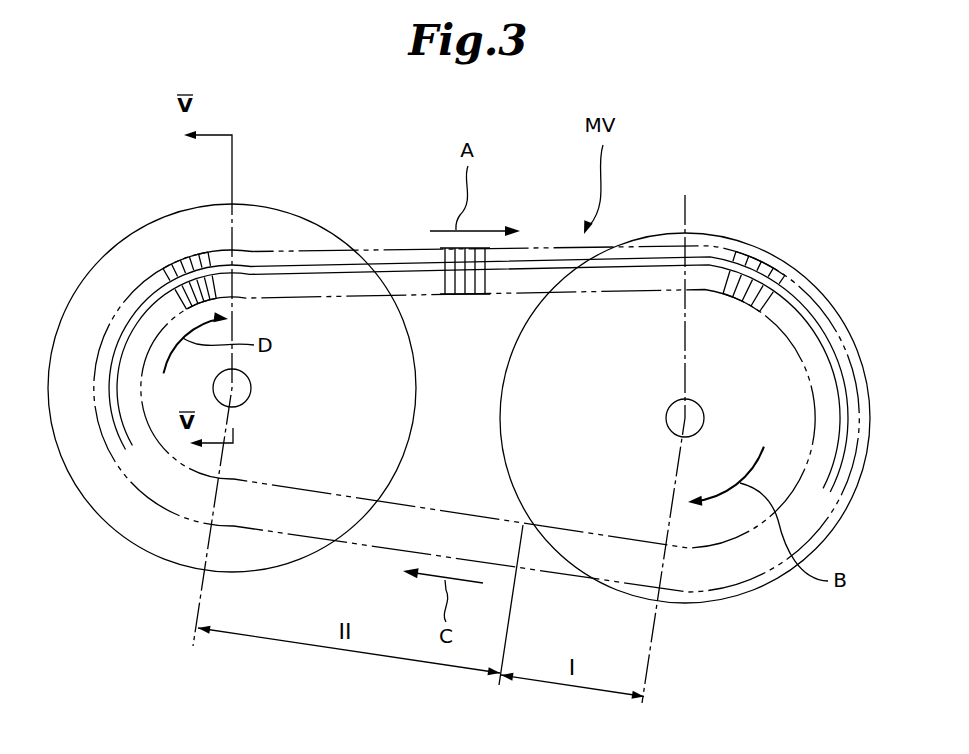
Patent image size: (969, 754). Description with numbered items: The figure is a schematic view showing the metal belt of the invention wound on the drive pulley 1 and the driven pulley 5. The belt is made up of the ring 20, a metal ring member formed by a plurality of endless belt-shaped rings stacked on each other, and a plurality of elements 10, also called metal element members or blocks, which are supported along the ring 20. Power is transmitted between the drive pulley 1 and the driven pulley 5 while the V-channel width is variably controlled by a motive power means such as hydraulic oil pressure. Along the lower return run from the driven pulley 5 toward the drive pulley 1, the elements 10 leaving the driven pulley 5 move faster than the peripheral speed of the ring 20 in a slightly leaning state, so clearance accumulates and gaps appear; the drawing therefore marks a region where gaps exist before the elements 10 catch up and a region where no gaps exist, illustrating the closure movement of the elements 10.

The drive pulley 1 is at (126, 537).
The driven pulley 5 is at (754, 588).
The elements 10 is at (440, 297).
The ring 20 is at (385, 266).